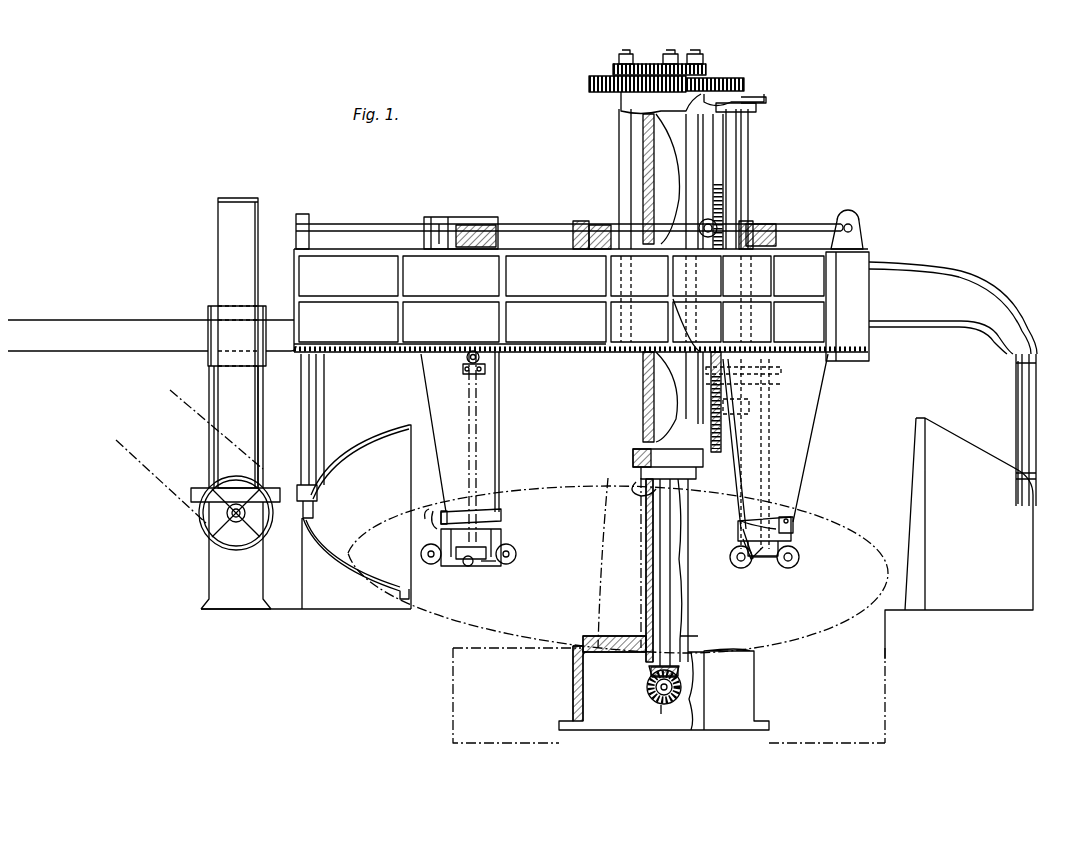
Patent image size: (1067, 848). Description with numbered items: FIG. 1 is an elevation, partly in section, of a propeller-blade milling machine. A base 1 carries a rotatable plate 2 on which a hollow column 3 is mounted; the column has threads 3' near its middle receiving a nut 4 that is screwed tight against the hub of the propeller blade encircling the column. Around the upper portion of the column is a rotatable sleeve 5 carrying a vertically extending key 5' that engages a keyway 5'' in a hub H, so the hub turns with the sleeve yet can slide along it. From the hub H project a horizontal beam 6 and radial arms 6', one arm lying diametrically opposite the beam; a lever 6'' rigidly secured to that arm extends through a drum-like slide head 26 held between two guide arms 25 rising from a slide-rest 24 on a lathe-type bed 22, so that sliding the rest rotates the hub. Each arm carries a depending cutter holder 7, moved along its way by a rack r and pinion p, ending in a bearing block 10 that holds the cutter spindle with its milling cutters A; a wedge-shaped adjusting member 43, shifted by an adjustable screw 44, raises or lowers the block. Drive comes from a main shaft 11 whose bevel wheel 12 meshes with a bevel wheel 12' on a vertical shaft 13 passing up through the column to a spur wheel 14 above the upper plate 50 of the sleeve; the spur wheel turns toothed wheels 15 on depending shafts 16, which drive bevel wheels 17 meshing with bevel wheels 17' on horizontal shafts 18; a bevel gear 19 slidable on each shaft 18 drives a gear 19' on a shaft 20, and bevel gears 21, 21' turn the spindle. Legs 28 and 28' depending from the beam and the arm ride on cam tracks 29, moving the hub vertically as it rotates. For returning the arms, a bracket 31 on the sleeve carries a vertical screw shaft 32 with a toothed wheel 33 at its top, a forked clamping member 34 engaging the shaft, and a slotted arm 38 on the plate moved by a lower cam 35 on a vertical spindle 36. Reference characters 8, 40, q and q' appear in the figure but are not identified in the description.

The base 1 is at (572, 690).
The rotatable plate 2 is at (590, 637).
The hollow column 3 is at (643, 570).
The threads 3' is at (676, 481).
The nut 4 is at (632, 455).
The rotatable sleeve 5 is at (643, 278).
The key 5' is at (703, 278).
The keyway 5'' is at (710, 325).
The beam 6 is at (953, 384).
The arms 6' is at (851, 290).
The lever 6'' is at (152, 325).
The cutter holder 7 is at (808, 470).
The frame 8 is at (541, 353).
The bearing block 10 is at (500, 535).
The main shaft 11 is at (662, 718).
The bevel wheel 12 is at (641, 687).
The bevel wheel 12' is at (689, 670).
The vertical shaft 13 is at (690, 612).
The spur wheel 14 is at (668, 62).
The toothed wheels 15 is at (614, 58).
The depending shafts 16 is at (735, 165).
The bevel wheel 17 is at (625, 234).
The bevel wheel 17' is at (666, 217).
The horizontal shaft 18 is at (815, 232).
The bevel gear 19 is at (643, 212).
The bevel gear 19' is at (631, 246).
The shaft 20 is at (795, 430).
The bevel gear 21 is at (607, 572).
The bevel gear 21' is at (436, 568).
The bed 22 is at (208, 594).
The slide-rest 24 is at (200, 527).
The guide arms 25 is at (217, 248).
The slide head 26 is at (207, 313).
The leg 28 is at (995, 432).
The leg 28' is at (326, 436).
The cam tracks 29 is at (335, 610).
The bracket 31 is at (700, 375).
The screw shaft 32 is at (722, 183).
The toothed wheel 33 is at (743, 85).
The forked clamping member 34 is at (770, 393).
The lower cam 35 is at (755, 108).
The vertical spindle 36 is at (747, 132).
The slotted arm 38 is at (765, 98).
The lever 40 is at (742, 542).
The adjusting member 43 is at (740, 522).
The adjustable screw 44 is at (793, 524).
The upper plate 50 is at (618, 105).
The cutter A is at (783, 569).
The hub H is at (651, 326).
The pinion p is at (455, 365).
The axle q is at (492, 574).
The axle q' is at (764, 574).
The rack r is at (385, 353).